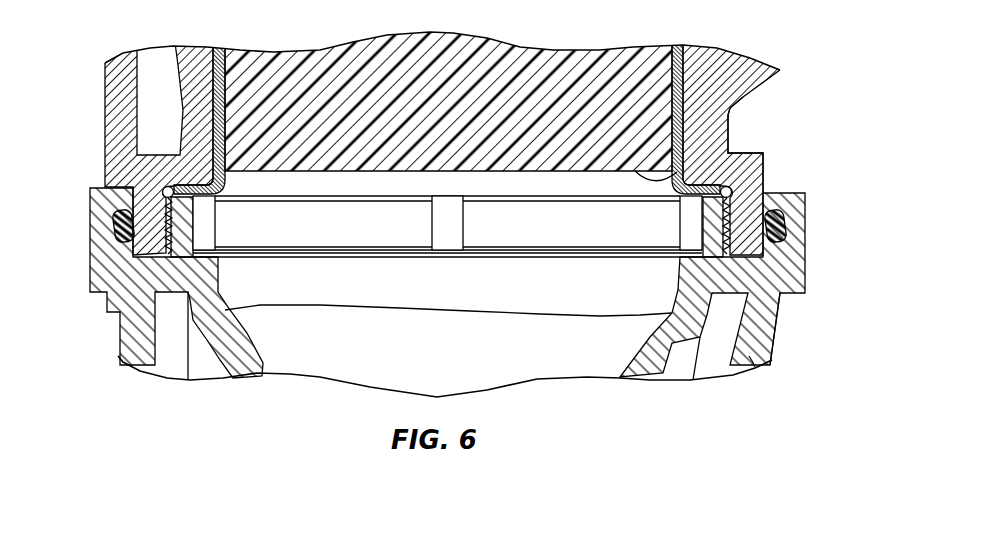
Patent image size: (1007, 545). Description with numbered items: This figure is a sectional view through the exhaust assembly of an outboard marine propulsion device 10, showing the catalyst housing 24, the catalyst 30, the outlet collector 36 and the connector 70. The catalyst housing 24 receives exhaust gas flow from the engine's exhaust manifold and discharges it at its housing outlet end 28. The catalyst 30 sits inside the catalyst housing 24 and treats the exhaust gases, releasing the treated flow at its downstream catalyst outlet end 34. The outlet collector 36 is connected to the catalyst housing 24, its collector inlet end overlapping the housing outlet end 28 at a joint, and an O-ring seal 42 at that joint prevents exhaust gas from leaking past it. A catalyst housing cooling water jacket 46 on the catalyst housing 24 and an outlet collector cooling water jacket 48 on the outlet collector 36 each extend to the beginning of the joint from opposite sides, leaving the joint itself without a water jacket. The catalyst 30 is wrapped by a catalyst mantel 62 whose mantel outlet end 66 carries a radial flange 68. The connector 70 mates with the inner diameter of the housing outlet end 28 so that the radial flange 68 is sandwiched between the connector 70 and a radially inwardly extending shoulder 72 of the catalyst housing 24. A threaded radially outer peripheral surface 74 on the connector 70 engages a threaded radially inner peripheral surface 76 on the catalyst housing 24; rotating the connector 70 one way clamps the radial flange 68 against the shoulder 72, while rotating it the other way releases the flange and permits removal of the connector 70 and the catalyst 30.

The outboard marine propulsion device 10 is at (814, 193).
The catalyst housing 24 is at (121, 68).
The housing outlet end 28 is at (160, 272).
The catalyst 30 is at (628, 68).
The catalyst outlet end 34 is at (683, 177).
The outlet collector 36 is at (753, 366).
The seal 42 is at (787, 230).
The catalyst housing cooling water jacket 46 is at (168, 348).
The outlet collector cooling water jacket 48 is at (160, 92).
The catalyst mantel 62 is at (678, 77).
The mantel outlet end 66 is at (682, 203).
The radial flange 68 is at (164, 192).
The connector 70 is at (363, 232).
The radially inwardly extending shoulder 72 is at (185, 180).
The threaded radially outer peripheral surface 74 is at (168, 236).
The threaded radially inner peripheral surface 76 is at (398, 268).